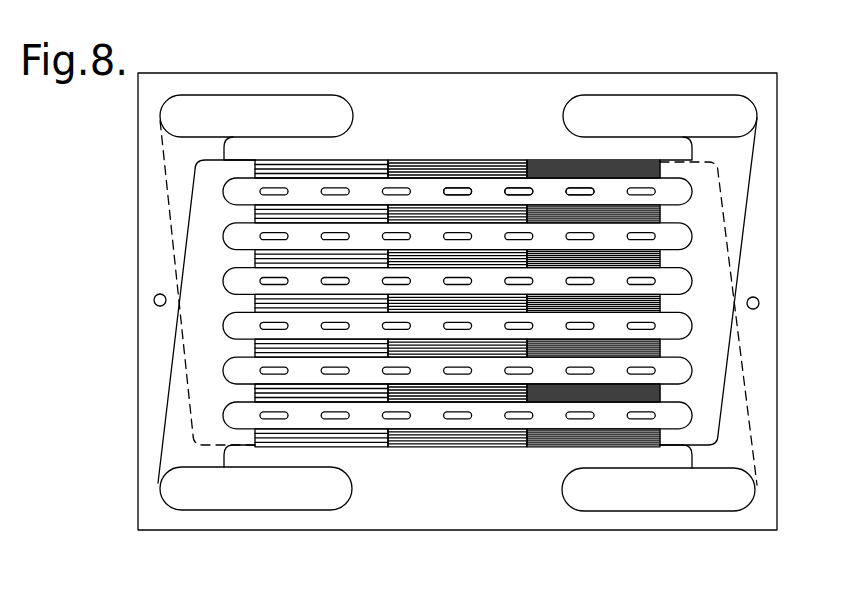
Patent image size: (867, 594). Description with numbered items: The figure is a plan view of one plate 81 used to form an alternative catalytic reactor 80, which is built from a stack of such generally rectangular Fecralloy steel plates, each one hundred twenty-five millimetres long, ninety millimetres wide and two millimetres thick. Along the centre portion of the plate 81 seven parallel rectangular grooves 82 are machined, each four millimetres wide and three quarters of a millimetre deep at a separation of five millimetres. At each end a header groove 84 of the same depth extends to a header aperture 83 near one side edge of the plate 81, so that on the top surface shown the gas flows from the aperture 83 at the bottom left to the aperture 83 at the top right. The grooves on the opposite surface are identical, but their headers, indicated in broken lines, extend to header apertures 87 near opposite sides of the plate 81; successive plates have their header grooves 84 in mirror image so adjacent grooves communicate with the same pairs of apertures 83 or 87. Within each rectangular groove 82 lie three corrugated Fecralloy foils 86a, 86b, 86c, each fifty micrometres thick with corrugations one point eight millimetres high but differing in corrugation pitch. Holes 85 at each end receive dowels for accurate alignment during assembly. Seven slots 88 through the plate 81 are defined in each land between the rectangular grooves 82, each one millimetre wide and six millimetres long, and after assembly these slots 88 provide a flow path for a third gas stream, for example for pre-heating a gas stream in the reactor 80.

The alternative reactor 80 is at (748, 62).
The plate 81 is at (556, 94).
The rectangular groove 82 is at (422, 205).
The header aperture 83 is at (752, 120).
The header groove 84 is at (198, 343).
The hole 85 is at (154, 296).
The corrugated Fecralloy foil 86a is at (363, 447).
The corrugated Fecralloy foil 86b is at (432, 448).
The corrugated Fecralloy foil 86c is at (540, 448).
The header aperture 87 is at (175, 121).
The slot 88 is at (578, 192).